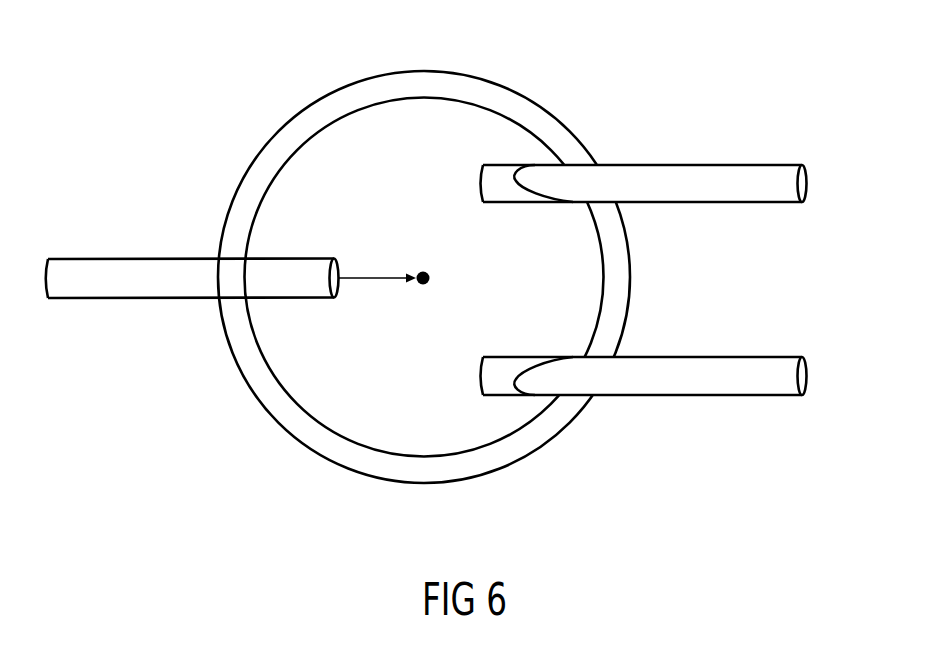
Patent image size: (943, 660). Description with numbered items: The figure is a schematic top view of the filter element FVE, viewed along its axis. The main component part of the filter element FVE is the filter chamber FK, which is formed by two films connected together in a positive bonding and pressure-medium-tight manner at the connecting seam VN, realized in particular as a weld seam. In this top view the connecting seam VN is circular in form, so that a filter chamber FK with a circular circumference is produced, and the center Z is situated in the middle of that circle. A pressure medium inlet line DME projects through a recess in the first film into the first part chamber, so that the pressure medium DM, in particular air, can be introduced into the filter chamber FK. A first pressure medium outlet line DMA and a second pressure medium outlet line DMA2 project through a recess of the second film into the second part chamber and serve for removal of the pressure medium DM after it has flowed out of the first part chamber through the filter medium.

The filter element FVE is at (455, 309).
The pressure medium inlet line DME is at (108, 298).
The connecting seam VN is at (428, 468).
The filter chamber FK is at (321, 180).
The first pressure medium outlet line DMA is at (672, 165).
The second pressure medium outlet line DMA2 is at (665, 395).
The pressure medium DM is at (363, 277).
The center Z is at (430, 278).